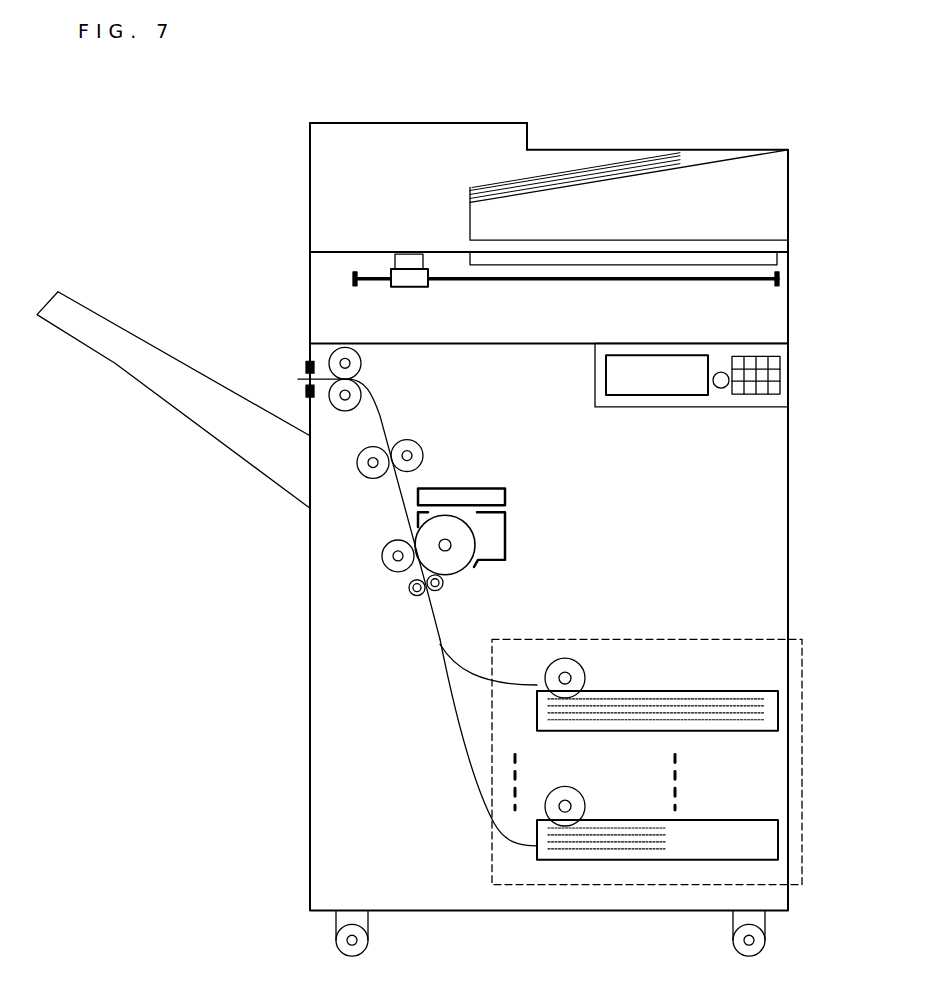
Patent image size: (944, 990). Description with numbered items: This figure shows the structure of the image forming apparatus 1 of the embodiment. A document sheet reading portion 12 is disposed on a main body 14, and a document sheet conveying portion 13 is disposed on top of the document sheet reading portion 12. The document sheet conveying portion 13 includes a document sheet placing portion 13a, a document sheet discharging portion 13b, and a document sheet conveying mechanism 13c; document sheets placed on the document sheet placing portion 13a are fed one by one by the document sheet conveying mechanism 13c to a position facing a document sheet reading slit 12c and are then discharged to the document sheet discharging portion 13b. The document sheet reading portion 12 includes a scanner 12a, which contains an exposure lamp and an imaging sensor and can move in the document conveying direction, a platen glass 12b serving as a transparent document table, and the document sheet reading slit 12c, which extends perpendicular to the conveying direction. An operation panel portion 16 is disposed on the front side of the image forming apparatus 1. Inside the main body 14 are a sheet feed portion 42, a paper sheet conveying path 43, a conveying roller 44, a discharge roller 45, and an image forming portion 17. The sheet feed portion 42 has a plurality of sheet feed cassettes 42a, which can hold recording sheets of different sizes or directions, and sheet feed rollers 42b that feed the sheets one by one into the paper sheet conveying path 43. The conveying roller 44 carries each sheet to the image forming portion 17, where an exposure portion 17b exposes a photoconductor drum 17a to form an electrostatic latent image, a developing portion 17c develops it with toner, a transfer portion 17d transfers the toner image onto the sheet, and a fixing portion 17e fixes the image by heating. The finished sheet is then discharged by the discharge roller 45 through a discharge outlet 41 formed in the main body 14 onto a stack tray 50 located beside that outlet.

The image forming apparatus 1 is at (243, 156).
The document sheet conveying portion 13 is at (310, 186).
The document sheet placing portion 13a is at (688, 162).
The document sheet discharging portion 13b is at (655, 234).
The document sheet conveying mechanism 13c is at (420, 127).
The document sheet reading portion 12 is at (310, 288).
The scanner 12a is at (412, 285).
The platen glass 12b is at (777, 257).
The document sheet reading slit 12c is at (418, 249).
The operation panel portion 16 is at (786, 393).
The discharge outlet 41 is at (306, 378).
The discharge roller 45 is at (362, 360).
The image forming portion 17 is at (489, 527).
The photoconductor drum 17a is at (462, 573).
The exposure portion 17b is at (507, 490).
The developing portion 17c is at (507, 527).
The transfer portion 17d is at (382, 556).
The fixing portion 17e is at (424, 451).
The conveying roller 44 is at (409, 588).
The paper sheet conveying path 43 is at (427, 603).
The main body 14 is at (790, 600).
The sheet feed portion 42 is at (674, 761).
The sheet feed cassettes 42a is at (710, 691).
The sheet feed rollers 42b is at (587, 680).
The stack tray 50 is at (203, 425).